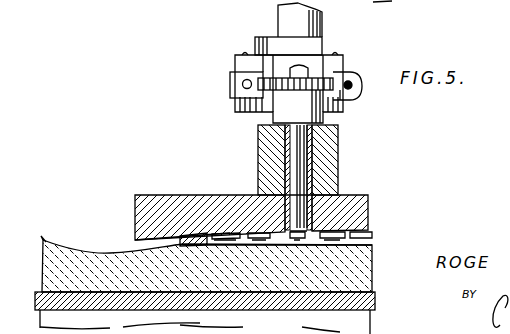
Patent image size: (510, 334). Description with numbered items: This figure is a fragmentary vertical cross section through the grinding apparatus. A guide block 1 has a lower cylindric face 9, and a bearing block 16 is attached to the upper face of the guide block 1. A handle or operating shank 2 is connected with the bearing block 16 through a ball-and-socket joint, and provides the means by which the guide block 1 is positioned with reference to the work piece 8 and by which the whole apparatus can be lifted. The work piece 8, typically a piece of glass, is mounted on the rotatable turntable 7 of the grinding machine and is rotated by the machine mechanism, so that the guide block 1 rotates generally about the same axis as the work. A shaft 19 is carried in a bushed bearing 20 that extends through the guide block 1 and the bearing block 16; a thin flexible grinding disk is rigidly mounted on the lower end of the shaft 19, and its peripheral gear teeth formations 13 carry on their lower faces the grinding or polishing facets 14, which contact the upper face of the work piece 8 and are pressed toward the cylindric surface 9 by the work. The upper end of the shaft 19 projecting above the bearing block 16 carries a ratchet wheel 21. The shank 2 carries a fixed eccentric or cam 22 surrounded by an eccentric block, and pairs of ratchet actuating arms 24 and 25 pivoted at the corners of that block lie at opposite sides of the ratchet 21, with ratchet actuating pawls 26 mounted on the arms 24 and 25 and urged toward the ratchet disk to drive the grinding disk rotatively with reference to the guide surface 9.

The guide block 1 is at (368, 197).
The operating shank 2 is at (319, 30).
The rotatable turntable 7 is at (352, 325).
The work piece 8 is at (367, 270).
The lower cylindric face 9 is at (138, 234).
The inter-meshing gear teeth formations 13 is at (190, 240).
The grinding facets 14 is at (180, 238).
The bearing block 16 is at (267, 153).
The shaft 19 is at (297, 165).
The bushed bearings 20 is at (312, 147).
The ratchet wheel 21 is at (343, 72).
The eccentric 22 is at (257, 45).
The ratchet actuating arms 24 is at (233, 95).
The ratchet actuating arms 25 is at (358, 92).
The ratchet actuating pawls 26 is at (235, 78).